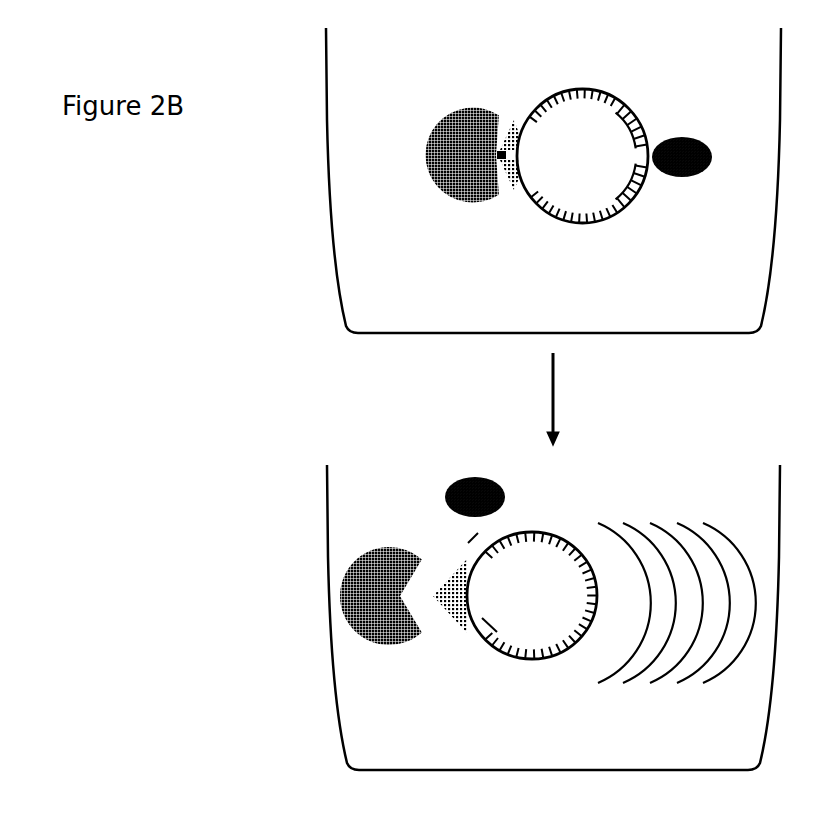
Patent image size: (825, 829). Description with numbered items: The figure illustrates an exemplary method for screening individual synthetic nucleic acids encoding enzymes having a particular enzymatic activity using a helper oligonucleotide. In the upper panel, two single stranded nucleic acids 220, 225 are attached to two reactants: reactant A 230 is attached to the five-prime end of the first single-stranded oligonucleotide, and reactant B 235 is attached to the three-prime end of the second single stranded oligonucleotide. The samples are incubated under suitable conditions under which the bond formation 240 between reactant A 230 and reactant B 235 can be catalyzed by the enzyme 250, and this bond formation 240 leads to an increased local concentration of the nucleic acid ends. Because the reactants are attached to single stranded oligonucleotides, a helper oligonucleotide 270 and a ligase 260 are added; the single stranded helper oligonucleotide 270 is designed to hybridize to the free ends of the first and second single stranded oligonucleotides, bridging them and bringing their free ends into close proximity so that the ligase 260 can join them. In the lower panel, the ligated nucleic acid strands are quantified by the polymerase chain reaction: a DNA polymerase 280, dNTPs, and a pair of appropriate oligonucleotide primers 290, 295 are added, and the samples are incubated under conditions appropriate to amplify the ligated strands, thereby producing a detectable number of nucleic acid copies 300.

The single stranded nucleic acid 220 is at (614, 82).
The single stranded nucleic acid 225 is at (605, 232).
The reactant A 230 is at (513, 119).
The reactant B 235 is at (514, 199).
The bond formation 240 is at (485, 152).
The enzyme 250 is at (461, 182).
The ligase 260 is at (711, 184).
The helper oligonucleotide 270 is at (632, 156).
The DNA polymerase 280 is at (512, 493).
The oligonucleotide primer 290 is at (459, 535).
The oligonucleotide primer 295 is at (476, 629).
The nucleic acid copies 300 is at (683, 696).